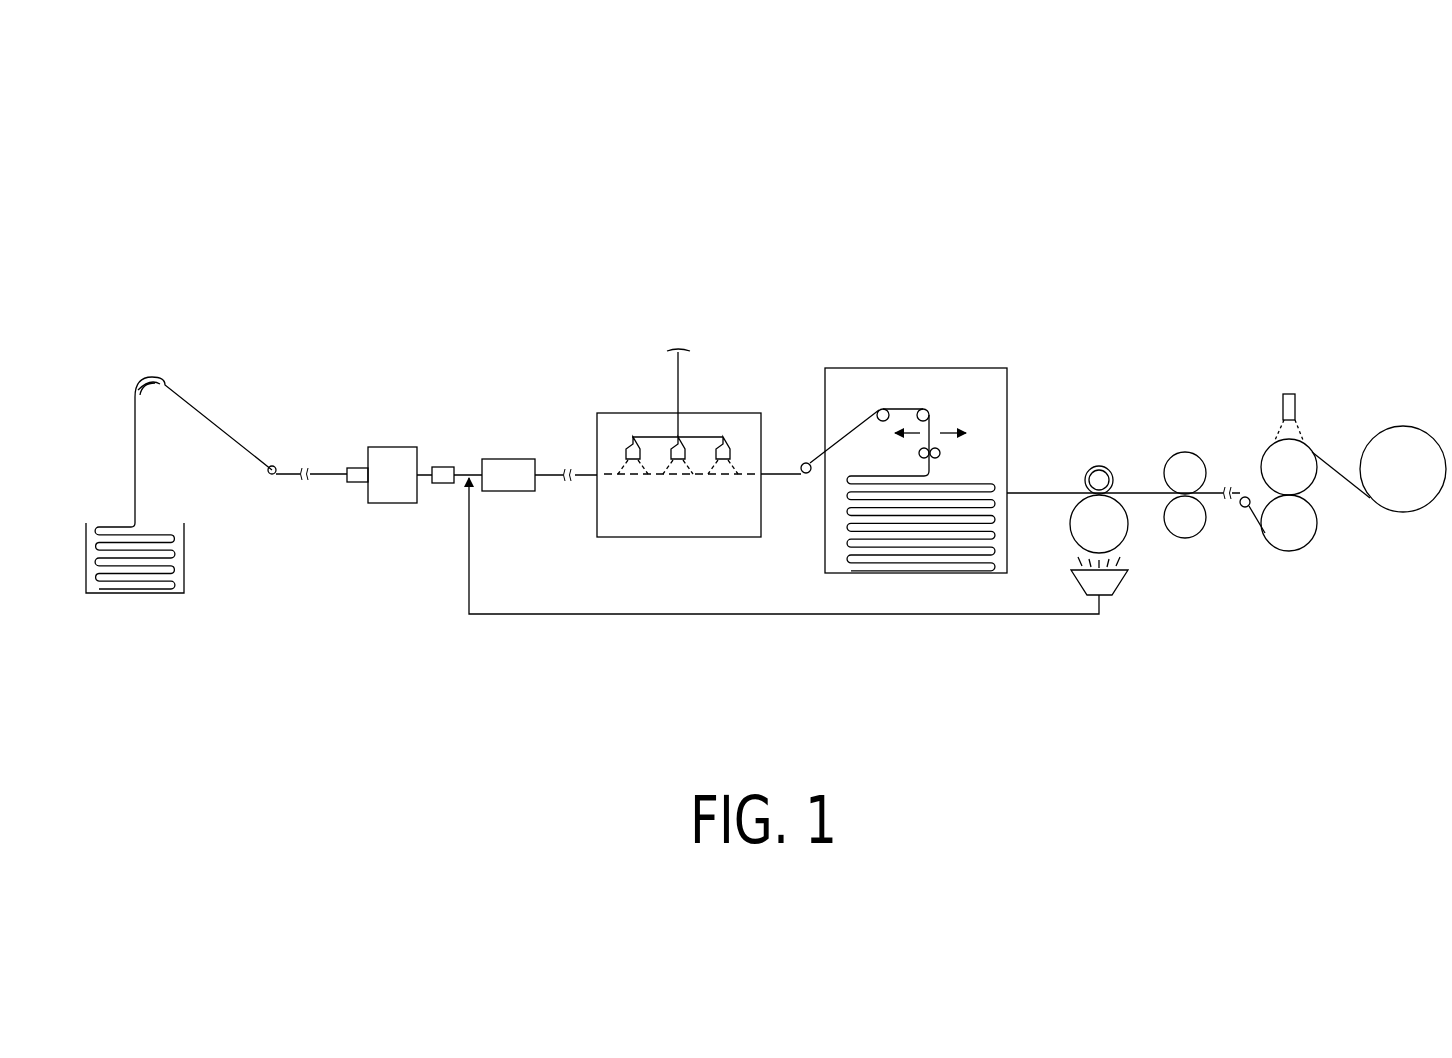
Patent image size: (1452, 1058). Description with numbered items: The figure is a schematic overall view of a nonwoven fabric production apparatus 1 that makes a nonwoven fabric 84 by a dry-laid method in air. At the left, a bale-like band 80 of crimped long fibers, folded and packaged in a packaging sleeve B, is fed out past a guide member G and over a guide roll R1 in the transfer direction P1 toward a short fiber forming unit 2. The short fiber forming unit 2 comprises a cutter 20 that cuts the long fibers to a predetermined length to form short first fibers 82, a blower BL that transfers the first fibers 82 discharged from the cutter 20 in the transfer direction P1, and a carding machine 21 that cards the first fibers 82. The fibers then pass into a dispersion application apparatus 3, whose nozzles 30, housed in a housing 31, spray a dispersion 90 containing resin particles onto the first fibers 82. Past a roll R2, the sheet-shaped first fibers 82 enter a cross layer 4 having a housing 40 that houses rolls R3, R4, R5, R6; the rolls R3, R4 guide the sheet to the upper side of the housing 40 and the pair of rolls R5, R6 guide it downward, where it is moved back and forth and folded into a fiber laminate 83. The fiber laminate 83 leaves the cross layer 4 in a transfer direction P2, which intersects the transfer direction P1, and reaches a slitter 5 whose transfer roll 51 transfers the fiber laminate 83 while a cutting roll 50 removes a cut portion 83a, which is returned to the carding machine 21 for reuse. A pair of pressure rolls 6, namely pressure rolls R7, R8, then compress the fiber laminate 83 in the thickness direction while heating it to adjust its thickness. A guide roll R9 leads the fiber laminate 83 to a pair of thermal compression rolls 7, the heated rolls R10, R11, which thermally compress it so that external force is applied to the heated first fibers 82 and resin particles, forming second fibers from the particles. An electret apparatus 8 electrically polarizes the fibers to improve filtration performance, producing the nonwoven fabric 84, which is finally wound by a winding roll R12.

The nonwoven fabric production apparatus 1 is at (397, 187).
The short fiber forming unit 2 is at (441, 544).
The dispersion application apparatus 3 is at (701, 475).
The cross layer 4 is at (926, 474).
The slitter 5 is at (1093, 512).
The pair of pressure rolls 6 is at (1197, 486).
The pair of thermal compression rolls 7 is at (1342, 490).
The electret apparatus 8 is at (1288, 392).
The cutter 20 is at (392, 504).
The carding machine 21 is at (507, 492).
The nozzles 30 is at (727, 446).
The housing 31 is at (703, 538).
The housing 40 is at (942, 575).
The cutting roll 50 is at (1097, 465).
The transfer roll 51 is at (1130, 530).
The band 80 is at (218, 427).
The first fibers 82 is at (548, 470).
The fiber laminate 83 is at (1038, 490).
The cut portion 83a is at (1066, 560).
The nonwoven fabric 84 is at (1345, 473).
The dispersion 90 is at (736, 466).
The packaging sleeve B is at (135, 595).
The guide member G is at (148, 390).
The transfer direction P1 is at (356, 507).
The transfer direction P2 is at (1055, 507).
The blower BL is at (442, 465).
The guide roll R1 is at (277, 463).
The roll R2 is at (806, 476).
The roll R3 is at (881, 409).
The roll R4 is at (929, 409).
The roll R5 is at (918, 453).
The roll R6 is at (941, 453).
The pressure roll R7 is at (1183, 463).
The pressure roll R8 is at (1192, 530).
The guide roll R9 is at (1240, 510).
The thermal compression roll R10 is at (1305, 470).
The thermal compression roll R11 is at (1305, 530).
The winding roll R12 is at (1407, 435).